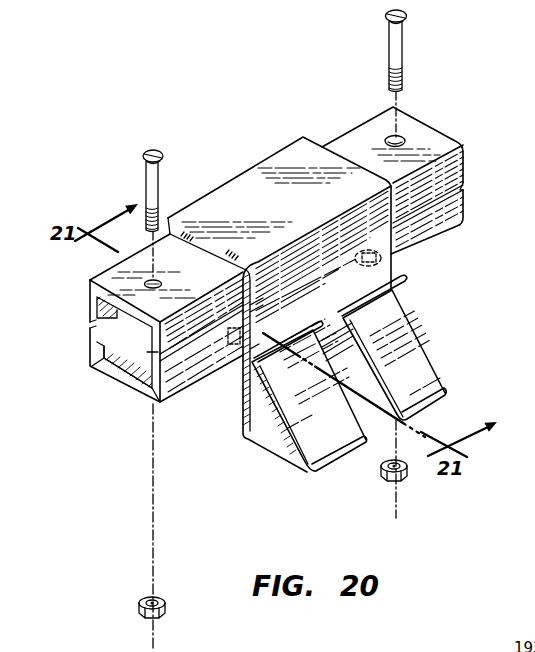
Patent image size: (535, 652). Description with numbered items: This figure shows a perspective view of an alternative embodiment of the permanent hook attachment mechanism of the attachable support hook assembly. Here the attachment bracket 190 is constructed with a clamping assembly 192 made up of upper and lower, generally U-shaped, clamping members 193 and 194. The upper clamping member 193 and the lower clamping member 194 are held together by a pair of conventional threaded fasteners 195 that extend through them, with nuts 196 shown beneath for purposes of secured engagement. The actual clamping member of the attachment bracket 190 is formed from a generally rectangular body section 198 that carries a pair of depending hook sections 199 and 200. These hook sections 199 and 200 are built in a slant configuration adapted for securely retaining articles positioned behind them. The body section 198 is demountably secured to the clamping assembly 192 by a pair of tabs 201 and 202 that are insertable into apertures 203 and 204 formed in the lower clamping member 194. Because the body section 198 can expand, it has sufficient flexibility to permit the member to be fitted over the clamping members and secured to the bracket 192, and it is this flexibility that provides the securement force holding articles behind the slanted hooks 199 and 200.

The attachment bracket 190 is at (302, 152).
The clamping assembly 192 is at (133, 389).
The upper clamping member 193 is at (90, 301).
The lower clamping member 194 is at (105, 371).
The threaded fasteners 195 is at (160, 160).
The nuts 196 is at (396, 476).
The body section 198 is at (377, 223).
The hook section 199 is at (419, 365).
The hook section 200 is at (318, 433).
The tab 201 is at (406, 263).
The tab 202 is at (258, 329).
The aperture 203 is at (227, 345).
The aperture 204 is at (358, 266).